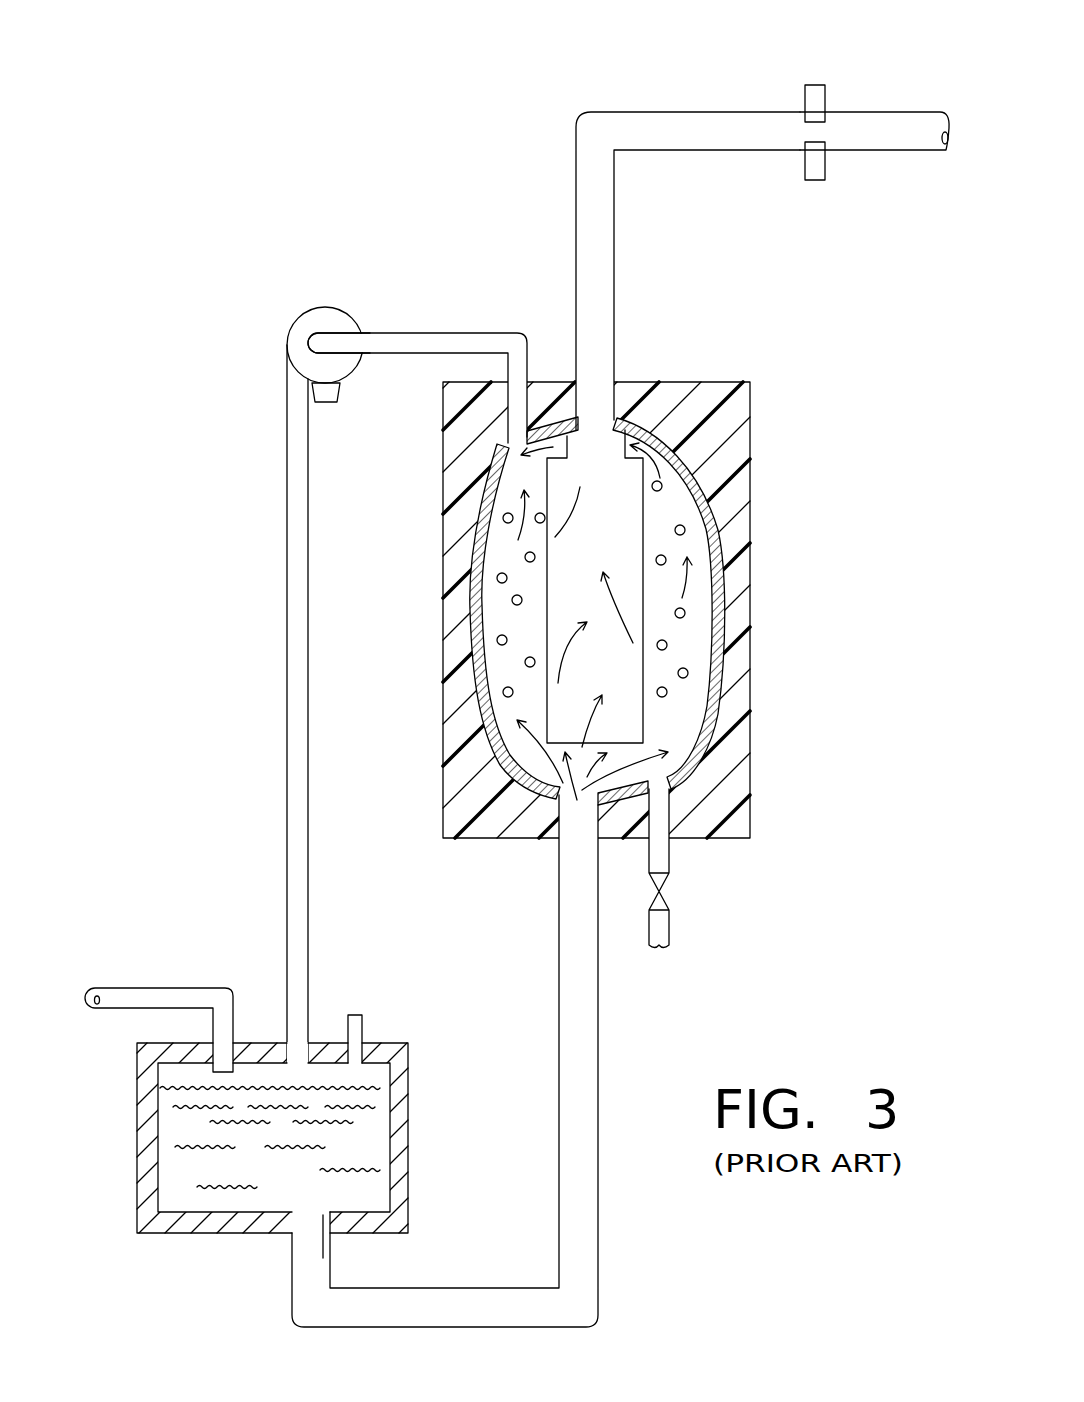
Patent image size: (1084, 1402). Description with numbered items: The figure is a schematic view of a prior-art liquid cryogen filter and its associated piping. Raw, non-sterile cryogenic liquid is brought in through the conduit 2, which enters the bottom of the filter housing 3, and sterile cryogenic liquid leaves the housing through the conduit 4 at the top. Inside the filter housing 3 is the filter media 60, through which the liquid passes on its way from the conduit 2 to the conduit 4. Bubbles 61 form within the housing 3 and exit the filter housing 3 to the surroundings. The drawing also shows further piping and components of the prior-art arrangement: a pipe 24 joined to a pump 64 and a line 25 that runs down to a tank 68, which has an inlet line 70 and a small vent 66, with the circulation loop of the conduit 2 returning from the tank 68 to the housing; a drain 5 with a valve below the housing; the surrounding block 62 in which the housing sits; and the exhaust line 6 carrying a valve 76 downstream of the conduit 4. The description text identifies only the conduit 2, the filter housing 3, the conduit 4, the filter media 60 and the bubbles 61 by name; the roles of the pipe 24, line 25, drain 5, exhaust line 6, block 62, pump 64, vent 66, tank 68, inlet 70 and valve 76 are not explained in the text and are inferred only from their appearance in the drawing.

The conduit 2 is at (600, 1220).
The liquid cryogen filter 3 is at (735, 530).
The conduit 4 is at (575, 125).
The drain pipe with valve 5 is at (667, 888).
The exhaust line 6 is at (900, 105).
The supply pipe 24 is at (458, 330).
The circulation pipe from pump 25 is at (287, 618).
The filter media 60 is at (650, 713).
The bubbles 61 is at (688, 672).
The heater block 62 is at (735, 425).
The pump 64 is at (297, 322).
The vent pipe 66 is at (352, 1015).
The reservoir tank 68 is at (137, 1122).
The inlet pipe 70 is at (175, 985).
The valve 76 is at (815, 83).